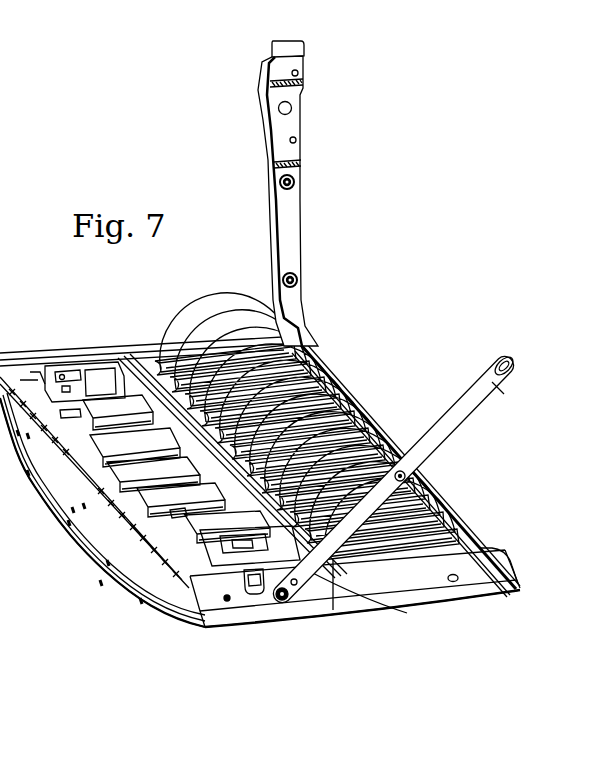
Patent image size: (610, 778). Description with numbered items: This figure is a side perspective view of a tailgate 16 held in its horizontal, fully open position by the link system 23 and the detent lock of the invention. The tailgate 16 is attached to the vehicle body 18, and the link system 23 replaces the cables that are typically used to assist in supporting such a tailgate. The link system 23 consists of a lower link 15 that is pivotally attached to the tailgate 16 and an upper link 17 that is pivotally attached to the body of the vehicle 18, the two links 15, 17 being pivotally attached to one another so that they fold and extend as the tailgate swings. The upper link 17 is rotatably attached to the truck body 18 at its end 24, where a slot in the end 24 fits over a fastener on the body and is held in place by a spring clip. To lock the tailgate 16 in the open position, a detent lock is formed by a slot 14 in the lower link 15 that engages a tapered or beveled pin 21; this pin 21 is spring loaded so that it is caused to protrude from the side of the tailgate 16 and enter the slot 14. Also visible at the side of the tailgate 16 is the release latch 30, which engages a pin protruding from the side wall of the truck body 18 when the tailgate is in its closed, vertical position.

The slot 14 is at (300, 580).
The lower link 15 is at (397, 610).
The tailgate 16 is at (133, 572).
The upper link 17 is at (455, 412).
The vehicle body 18 is at (300, 224).
The beveled pin 21 is at (295, 583).
The link system 23 is at (470, 451).
The end of upper link 24 is at (515, 381).
The release latch 30 is at (257, 594).